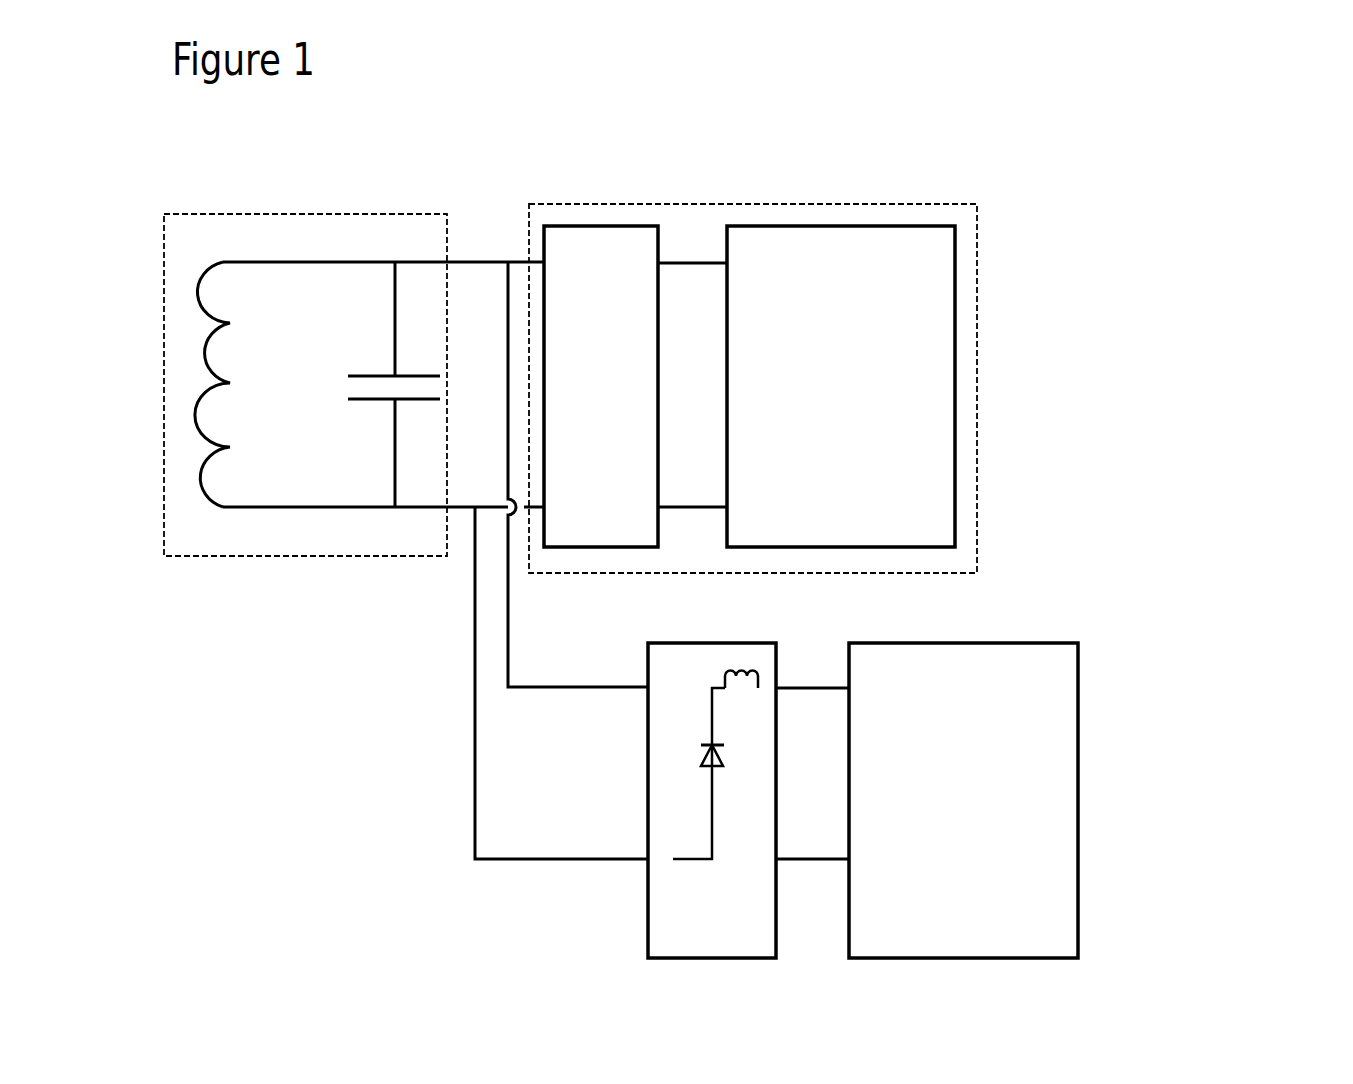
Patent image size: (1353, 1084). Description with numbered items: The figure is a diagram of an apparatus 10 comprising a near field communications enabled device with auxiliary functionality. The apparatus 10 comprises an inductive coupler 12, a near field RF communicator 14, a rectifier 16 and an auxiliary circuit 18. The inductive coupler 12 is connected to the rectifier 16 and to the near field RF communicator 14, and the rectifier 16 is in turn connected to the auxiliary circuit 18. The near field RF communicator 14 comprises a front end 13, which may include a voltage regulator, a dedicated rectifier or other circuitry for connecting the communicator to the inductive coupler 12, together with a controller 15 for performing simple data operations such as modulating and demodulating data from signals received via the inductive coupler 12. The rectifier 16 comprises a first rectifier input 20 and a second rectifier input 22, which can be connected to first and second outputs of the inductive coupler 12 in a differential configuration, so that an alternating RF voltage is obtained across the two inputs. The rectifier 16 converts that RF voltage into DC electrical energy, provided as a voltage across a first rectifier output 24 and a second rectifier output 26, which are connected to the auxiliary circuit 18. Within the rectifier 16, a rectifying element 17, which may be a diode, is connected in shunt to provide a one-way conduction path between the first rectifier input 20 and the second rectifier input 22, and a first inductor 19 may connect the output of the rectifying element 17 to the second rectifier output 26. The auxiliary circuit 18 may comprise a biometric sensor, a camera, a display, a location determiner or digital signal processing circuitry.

The apparatus 10 is at (1164, 510).
The inductive coupler 12 is at (328, 594).
The front end 13 is at (613, 378).
The near field RF communicator 14 is at (977, 398).
The controller 15 is at (857, 377).
The rectifier 16 is at (730, 922).
The rectifying element 17 is at (706, 743).
The auxiliary circuit 18 is at (980, 807).
The first inductor 19 is at (738, 673).
The first rectifier input 20 is at (618, 686).
The second rectifier input 22 is at (631, 861).
The first rectifier output 24 is at (787, 686).
The second rectifier output 26 is at (790, 861).